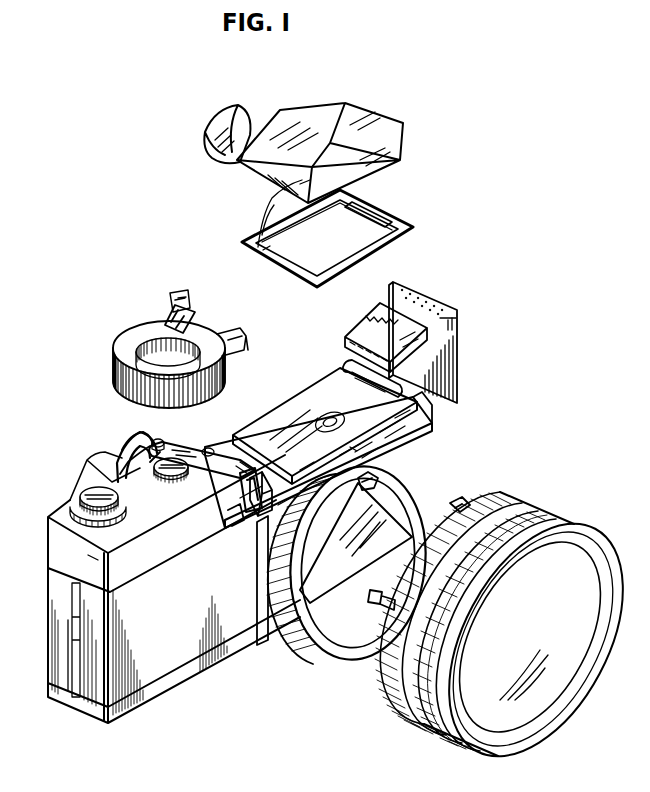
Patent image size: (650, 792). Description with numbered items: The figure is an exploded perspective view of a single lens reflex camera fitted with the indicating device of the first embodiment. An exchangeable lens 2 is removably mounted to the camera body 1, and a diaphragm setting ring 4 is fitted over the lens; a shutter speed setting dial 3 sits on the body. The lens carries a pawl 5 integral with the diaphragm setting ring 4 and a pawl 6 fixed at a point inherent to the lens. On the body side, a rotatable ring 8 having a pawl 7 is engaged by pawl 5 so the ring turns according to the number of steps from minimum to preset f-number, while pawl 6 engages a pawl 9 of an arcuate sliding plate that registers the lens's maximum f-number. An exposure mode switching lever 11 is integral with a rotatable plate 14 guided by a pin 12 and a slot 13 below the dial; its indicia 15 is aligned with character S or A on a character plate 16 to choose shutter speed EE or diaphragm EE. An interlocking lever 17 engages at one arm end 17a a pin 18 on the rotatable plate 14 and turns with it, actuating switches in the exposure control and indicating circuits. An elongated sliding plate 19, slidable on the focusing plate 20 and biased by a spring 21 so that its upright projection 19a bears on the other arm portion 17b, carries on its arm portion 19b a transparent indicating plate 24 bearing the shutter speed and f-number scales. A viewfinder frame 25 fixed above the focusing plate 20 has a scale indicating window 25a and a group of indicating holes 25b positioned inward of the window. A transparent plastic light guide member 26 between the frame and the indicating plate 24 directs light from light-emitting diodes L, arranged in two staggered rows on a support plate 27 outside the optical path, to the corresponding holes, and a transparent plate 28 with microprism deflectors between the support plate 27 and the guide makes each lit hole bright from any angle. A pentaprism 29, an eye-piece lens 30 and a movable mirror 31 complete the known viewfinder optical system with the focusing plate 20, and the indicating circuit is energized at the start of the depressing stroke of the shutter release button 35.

The camera body 1 is at (250, 624).
The exchangeable lens 2 is at (592, 514).
The shutter speed setting dial 3 is at (112, 358).
The diaphragm setting ring 4 is at (394, 710).
The pawl 5 is at (458, 503).
The pawl 6 is at (368, 599).
The pawl 7 is at (361, 489).
The rotatable ring 8 is at (320, 654).
The pawl 9 is at (264, 530).
The exposure mode switching lever 11 is at (182, 298).
The pin 12 is at (132, 434).
The slot 13 is at (108, 457).
The rotatable plate 14 is at (82, 492).
The indicia 15 is at (170, 304).
The character plate 16 is at (165, 322).
The interlocking lever 17 is at (204, 446).
The arm end 17a is at (186, 500).
The arm portion 17b is at (246, 492).
The pin 18 is at (154, 442).
The sliding plate 19 is at (398, 440).
The upright projection 19a is at (234, 522).
The arm portion 19b is at (434, 414).
The focusing plate 20 is at (272, 416).
The spring 21 is at (258, 505).
The indicating plate 24 is at (345, 366).
The viewfinder frame 25 is at (258, 256).
The scale indicating window 25a is at (385, 210).
The indicating holes 25b is at (368, 222).
The light guide member 26 is at (350, 332).
The support plate 27 is at (457, 350).
The transparent plate 28 is at (385, 318).
The pentaprism 29 is at (366, 116).
The eye-piece lens 30 is at (230, 118).
The movable mirror 31 is at (345, 557).
The shutter release button 35 is at (173, 482).
The light-emitting diodes L is at (448, 306).